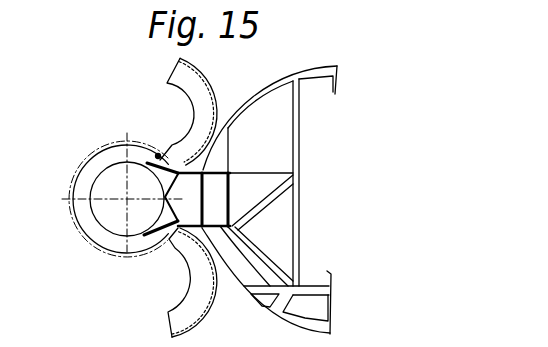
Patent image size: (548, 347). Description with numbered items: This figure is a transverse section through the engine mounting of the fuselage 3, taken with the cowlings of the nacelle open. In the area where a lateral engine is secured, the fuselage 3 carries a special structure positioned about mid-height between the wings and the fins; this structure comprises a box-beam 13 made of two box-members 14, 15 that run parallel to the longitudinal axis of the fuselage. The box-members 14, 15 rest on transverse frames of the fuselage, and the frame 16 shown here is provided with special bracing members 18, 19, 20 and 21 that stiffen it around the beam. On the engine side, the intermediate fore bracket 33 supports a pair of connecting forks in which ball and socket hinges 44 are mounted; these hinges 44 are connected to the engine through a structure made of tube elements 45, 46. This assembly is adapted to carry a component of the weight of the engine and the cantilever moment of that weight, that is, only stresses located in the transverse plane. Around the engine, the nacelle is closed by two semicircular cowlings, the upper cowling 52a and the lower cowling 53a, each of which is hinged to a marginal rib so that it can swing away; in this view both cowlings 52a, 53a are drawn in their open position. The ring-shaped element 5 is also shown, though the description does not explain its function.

The fuselage 3 is at (303, 70).
The hub ring 5 is at (106, 149).
The box-beam 13 is at (231, 179).
The box-member 14 is at (224, 248).
The box-member 15 is at (206, 170).
The frame 16 is at (256, 99).
The bracing member 18 is at (300, 145).
The bracing member 19 is at (268, 173).
The bracing member 20 is at (260, 201).
The bracing member 21 is at (270, 257).
The intermediate fore bracket 33 is at (193, 210).
The ball and socket hinge 44 is at (192, 193).
The tube element 45 is at (159, 152).
The tube element 46 is at (161, 183).
The upper cowling 52a is at (198, 88).
The lower cowling 53a is at (200, 324).